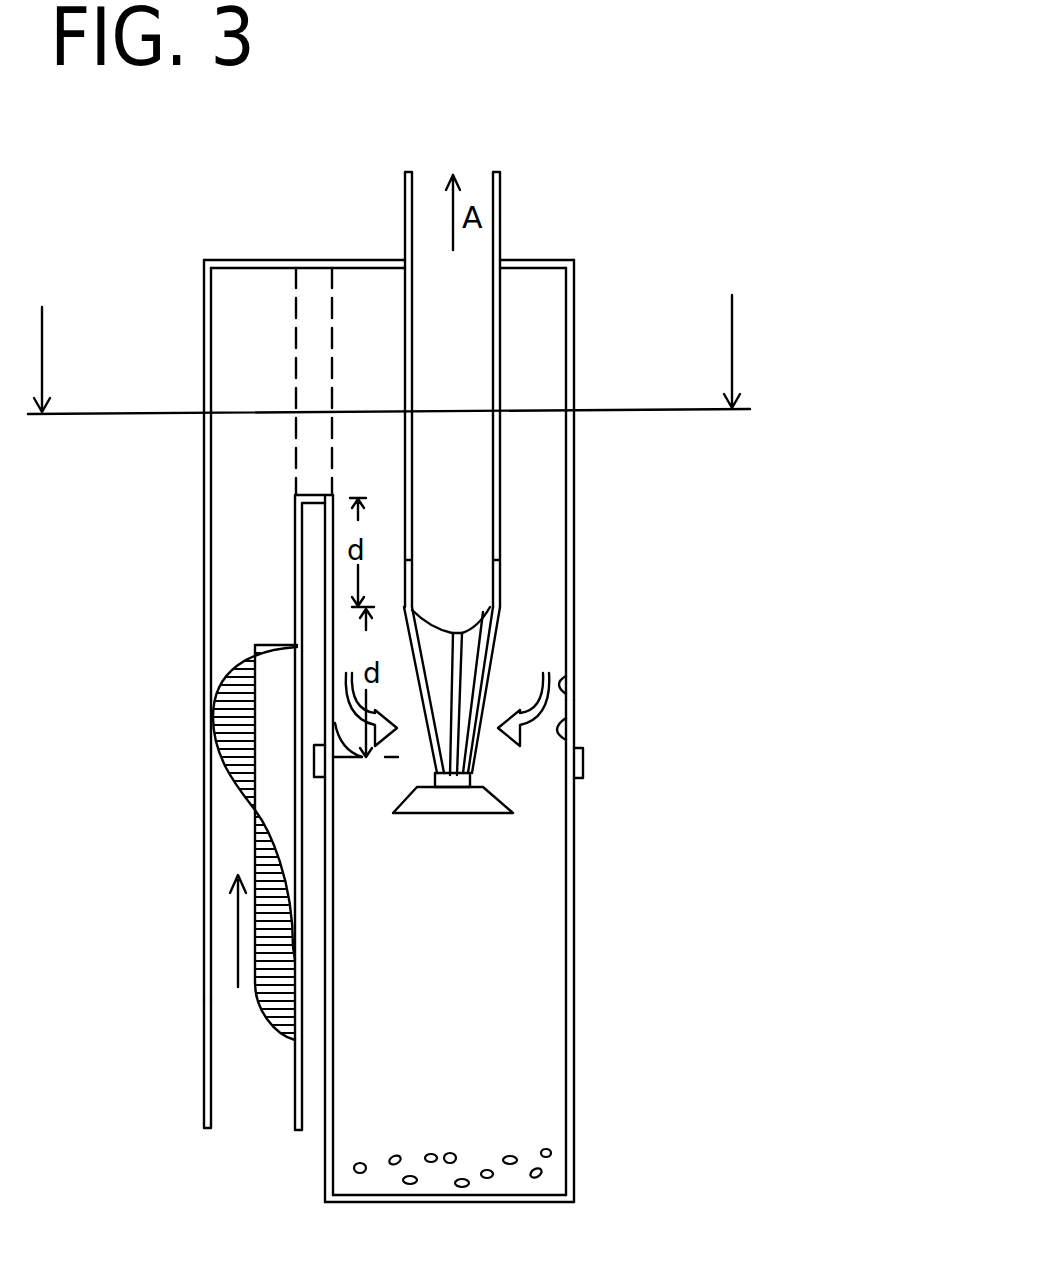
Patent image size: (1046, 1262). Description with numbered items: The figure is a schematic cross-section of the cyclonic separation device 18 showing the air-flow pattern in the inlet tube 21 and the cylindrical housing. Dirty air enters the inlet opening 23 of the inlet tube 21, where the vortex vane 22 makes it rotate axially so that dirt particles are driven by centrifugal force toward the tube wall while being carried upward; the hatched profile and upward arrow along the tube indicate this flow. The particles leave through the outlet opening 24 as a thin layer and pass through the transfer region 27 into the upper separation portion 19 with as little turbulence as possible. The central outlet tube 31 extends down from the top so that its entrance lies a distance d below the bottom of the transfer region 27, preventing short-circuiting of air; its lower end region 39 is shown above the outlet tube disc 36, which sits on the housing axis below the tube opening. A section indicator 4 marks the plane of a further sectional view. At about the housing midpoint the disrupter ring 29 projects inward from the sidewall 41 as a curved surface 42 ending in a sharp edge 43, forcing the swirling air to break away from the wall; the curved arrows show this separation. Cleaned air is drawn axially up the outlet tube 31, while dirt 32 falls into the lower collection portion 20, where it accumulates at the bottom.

The section line 4- 4 is at (389, 331).
The cyclonic separation device 18 is at (813, 415).
The upper separation portion 19 is at (588, 546).
The lower collection portion 20 is at (585, 937).
The inlet tube 21 is at (210, 758).
The vortex vane 22 is at (253, 913).
The inlet opening 23 is at (218, 1128).
The outlet opening 24 is at (292, 443).
The transfer region 27 is at (330, 374).
The disrupter ring 29 is at (567, 737).
The outlet tube 31 is at (505, 178).
The dirt 32 is at (491, 1152).
The outlet tube disc 36 is at (468, 802).
The nozzle 39 is at (478, 665).
The sidewall 41 is at (570, 672).
The curved surface 42 is at (568, 712).
The sharp edge 43 is at (554, 771).